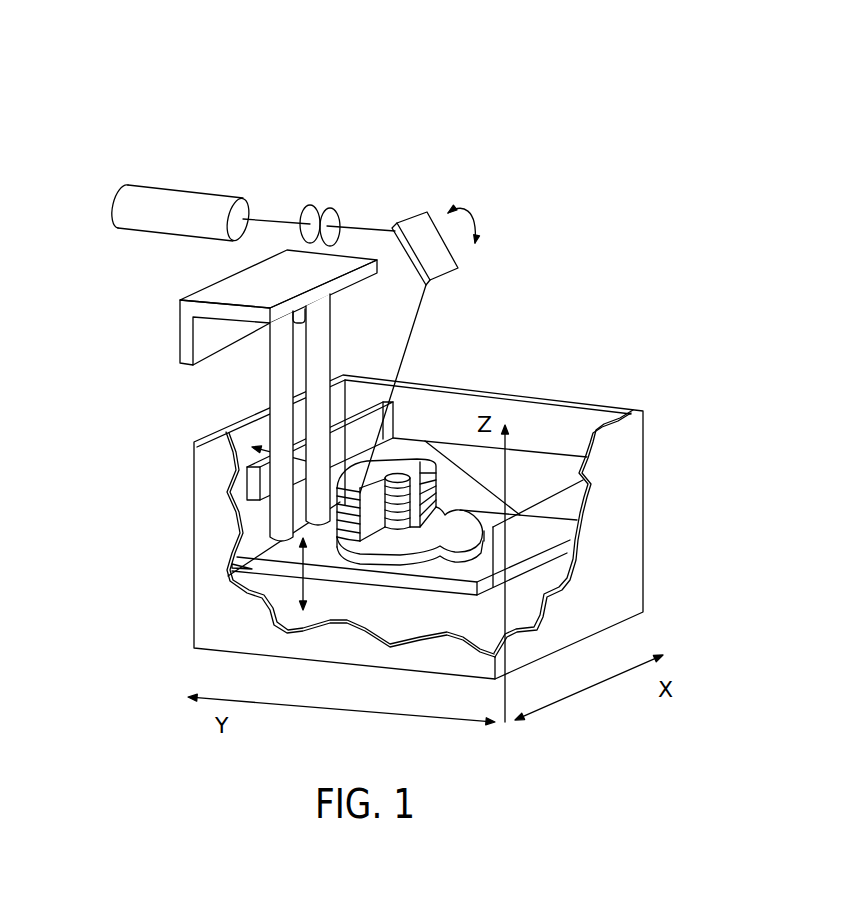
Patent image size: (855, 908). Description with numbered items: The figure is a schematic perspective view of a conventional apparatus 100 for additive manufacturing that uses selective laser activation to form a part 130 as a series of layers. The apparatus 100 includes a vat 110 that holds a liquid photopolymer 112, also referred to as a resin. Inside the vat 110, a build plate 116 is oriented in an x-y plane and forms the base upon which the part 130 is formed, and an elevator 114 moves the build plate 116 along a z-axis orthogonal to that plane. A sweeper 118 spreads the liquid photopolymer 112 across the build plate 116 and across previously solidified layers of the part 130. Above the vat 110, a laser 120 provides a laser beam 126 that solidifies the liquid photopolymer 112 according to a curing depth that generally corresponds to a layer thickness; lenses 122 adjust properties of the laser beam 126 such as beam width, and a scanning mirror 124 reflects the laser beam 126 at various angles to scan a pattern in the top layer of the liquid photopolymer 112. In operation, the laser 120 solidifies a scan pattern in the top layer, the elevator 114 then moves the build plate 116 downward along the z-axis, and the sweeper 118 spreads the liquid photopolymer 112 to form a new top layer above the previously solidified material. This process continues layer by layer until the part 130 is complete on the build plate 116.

The apparatus 100 is at (95, 93).
The vat 110 is at (530, 393).
The liquid photopolymer 112 is at (562, 508).
The elevator 114 is at (178, 333).
The build plate 116 is at (230, 575).
The sweeper 118 is at (247, 487).
The laser 120 is at (135, 228).
The lenses 122 is at (310, 204).
The scanning mirror 124 is at (462, 251).
The laser beam 126 is at (418, 307).
The part 130 is at (228, 565).